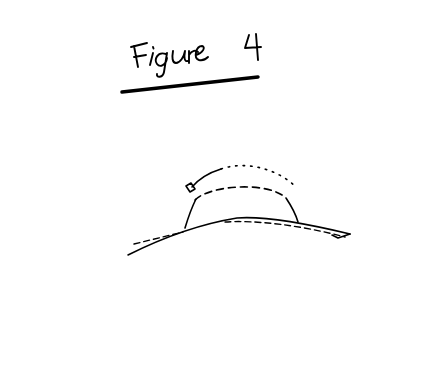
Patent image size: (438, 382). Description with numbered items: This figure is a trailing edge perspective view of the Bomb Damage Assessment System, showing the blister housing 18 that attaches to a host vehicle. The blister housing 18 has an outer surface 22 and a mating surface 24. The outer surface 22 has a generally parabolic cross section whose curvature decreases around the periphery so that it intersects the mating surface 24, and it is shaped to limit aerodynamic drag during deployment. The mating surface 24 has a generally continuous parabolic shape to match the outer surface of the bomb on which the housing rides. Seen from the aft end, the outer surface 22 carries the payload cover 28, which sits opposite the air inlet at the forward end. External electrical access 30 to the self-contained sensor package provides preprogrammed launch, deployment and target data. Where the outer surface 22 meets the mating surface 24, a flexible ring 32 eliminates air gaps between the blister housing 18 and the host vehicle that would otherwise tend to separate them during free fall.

The blister housing 18 is at (393, 90).
The outer surface 22 is at (242, 181).
The mating surface 24 is at (221, 228).
The payload cover 28 is at (273, 207).
The external electrical access 30 is at (186, 186).
The flexible ring 32 is at (347, 232).